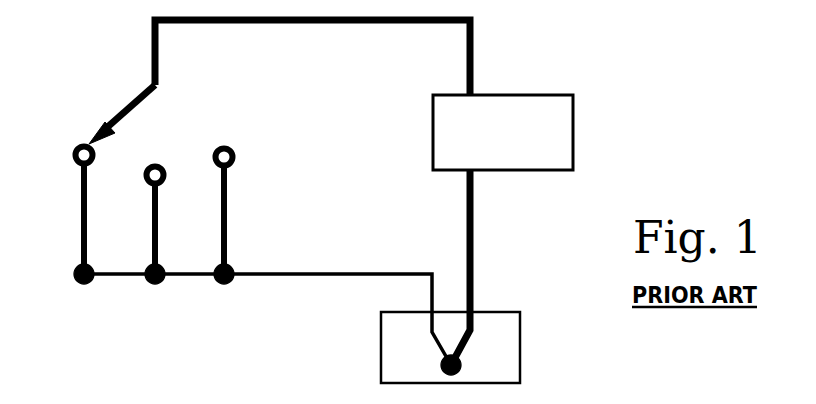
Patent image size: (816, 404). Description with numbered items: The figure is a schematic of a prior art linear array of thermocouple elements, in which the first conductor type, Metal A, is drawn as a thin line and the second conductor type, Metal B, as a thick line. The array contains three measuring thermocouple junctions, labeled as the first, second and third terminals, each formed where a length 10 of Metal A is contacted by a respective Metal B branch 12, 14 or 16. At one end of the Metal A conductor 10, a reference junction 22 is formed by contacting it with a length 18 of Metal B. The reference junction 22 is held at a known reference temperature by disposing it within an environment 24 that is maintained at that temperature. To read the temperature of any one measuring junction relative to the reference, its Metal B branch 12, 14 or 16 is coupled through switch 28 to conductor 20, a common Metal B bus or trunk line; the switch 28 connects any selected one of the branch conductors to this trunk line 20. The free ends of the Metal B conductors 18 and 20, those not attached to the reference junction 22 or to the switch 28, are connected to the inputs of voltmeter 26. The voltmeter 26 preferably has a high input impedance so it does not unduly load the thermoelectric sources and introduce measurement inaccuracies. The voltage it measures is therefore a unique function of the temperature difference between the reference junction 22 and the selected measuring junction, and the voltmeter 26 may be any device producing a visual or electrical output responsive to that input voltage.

The length of Metal A 10 is at (325, 267).
The Metal B branch 12 is at (76, 236).
The Metal B branch 14 is at (148, 232).
The Metal B branch 16 is at (215, 229).
The length of Metal B 18 is at (478, 213).
The Metal B conductor (common bus or trunk line) 20 is at (353, 30).
The reference junction 22 is at (432, 364).
The environment 24 is at (500, 348).
The voltmeter 26 is at (522, 100).
The switch 28 is at (115, 103).